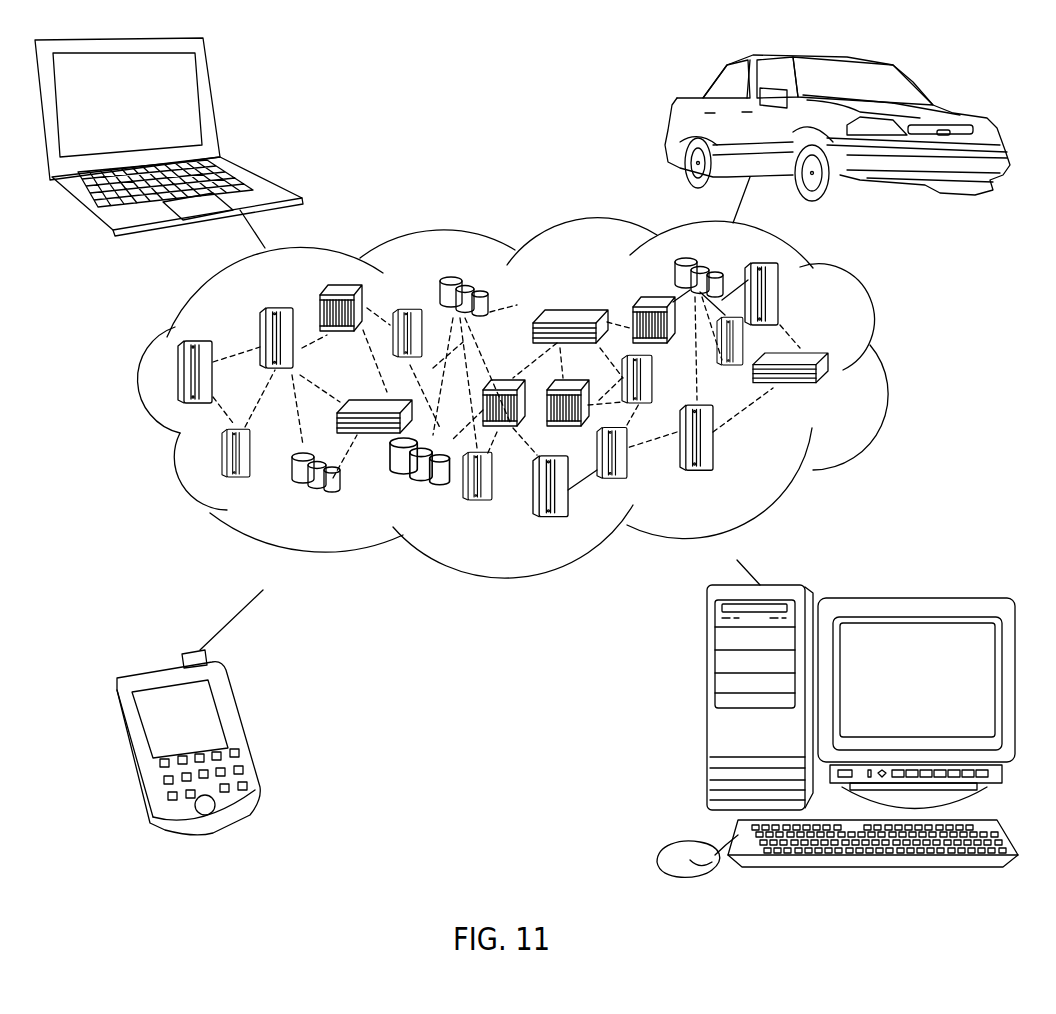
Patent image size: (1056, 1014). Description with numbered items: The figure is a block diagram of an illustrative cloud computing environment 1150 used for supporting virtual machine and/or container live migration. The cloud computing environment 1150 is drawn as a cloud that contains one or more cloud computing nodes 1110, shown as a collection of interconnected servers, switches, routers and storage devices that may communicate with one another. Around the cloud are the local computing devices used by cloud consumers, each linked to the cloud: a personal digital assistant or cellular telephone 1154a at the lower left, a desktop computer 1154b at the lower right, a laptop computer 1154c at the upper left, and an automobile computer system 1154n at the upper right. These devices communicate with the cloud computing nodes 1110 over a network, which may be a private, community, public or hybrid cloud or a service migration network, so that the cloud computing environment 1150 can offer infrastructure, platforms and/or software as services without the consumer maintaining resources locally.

The cloud computing environment 1150 is at (873, 310).
The cloud computing nodes 1110 is at (843, 393).
The personal digital assistant or cellular telephone 1154a is at (235, 718).
The desktop computer 1154b is at (705, 710).
The laptop computer 1154c is at (213, 95).
The automobile computer system 1154n is at (677, 102).